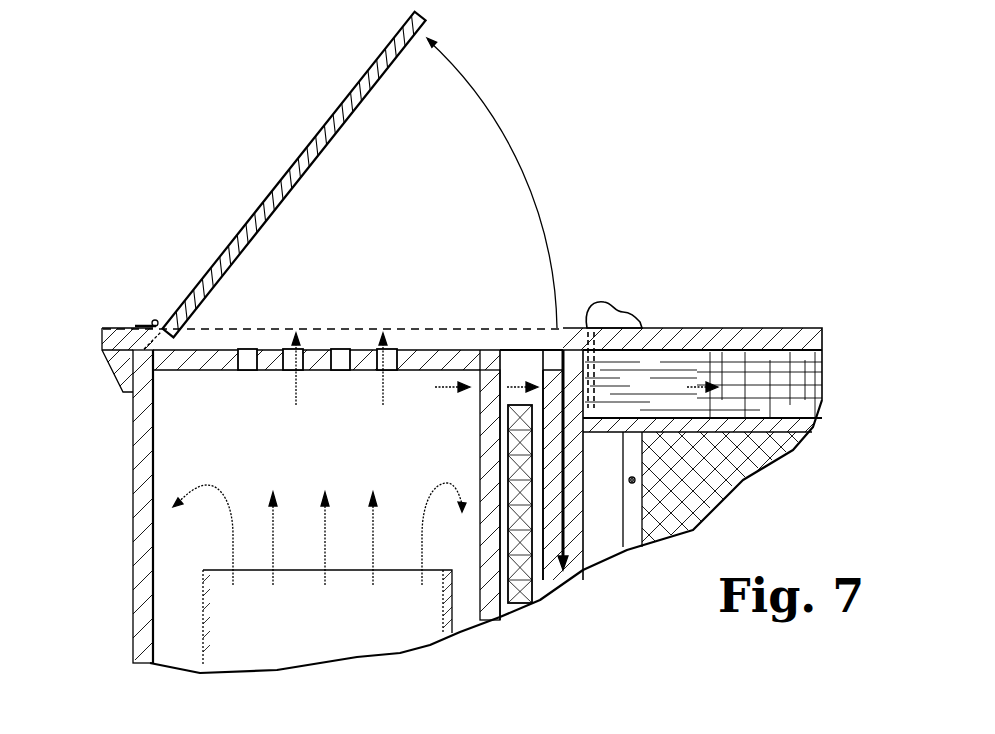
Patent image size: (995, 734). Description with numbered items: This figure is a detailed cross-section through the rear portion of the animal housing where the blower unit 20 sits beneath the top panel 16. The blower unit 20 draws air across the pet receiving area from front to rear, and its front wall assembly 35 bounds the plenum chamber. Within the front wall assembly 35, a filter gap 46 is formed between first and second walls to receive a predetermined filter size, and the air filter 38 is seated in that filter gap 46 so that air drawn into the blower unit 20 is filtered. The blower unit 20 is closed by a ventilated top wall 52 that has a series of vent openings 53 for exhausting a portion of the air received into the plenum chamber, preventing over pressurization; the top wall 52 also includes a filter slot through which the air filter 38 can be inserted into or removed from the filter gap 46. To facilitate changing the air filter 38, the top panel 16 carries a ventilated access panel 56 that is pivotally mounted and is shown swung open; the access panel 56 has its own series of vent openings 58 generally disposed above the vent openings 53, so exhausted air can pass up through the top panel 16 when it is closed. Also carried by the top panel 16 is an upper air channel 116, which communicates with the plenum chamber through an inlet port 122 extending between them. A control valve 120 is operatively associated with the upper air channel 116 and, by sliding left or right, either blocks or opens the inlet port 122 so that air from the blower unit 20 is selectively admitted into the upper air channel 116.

The top panel 16 is at (690, 342).
The blower unit 20 is at (143, 483).
The front wall assembly 35 is at (580, 570).
The air filter 38 is at (515, 577).
The filter gap 46 is at (513, 377).
The ventilated top wall 52 is at (422, 355).
The vent openings 53 is at (343, 362).
The ventilated access panel 56 is at (358, 86).
The vent openings 58 is at (217, 255).
The upper air channel 116 is at (783, 377).
The control valve 120 is at (610, 312).
The inlet port 122 is at (567, 383).